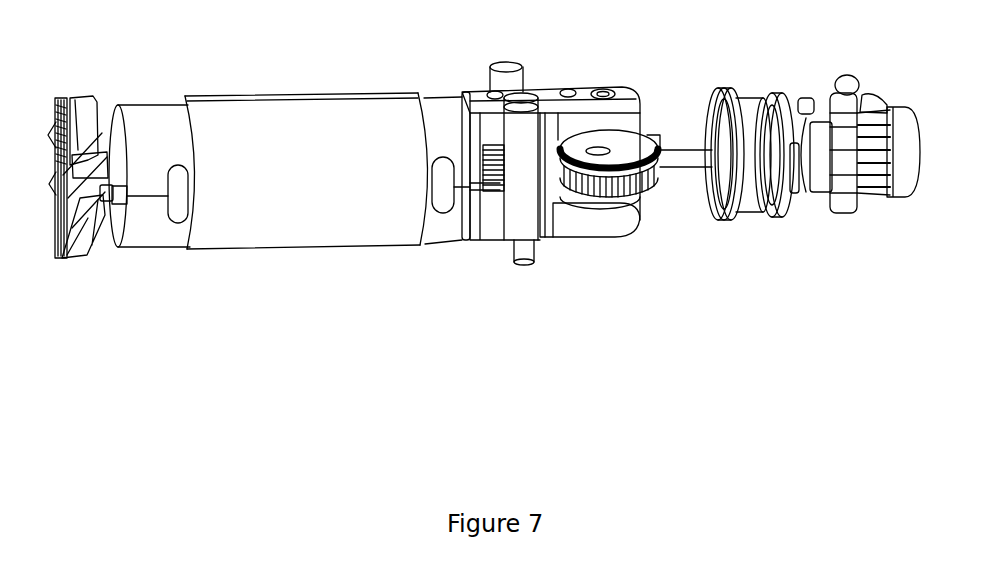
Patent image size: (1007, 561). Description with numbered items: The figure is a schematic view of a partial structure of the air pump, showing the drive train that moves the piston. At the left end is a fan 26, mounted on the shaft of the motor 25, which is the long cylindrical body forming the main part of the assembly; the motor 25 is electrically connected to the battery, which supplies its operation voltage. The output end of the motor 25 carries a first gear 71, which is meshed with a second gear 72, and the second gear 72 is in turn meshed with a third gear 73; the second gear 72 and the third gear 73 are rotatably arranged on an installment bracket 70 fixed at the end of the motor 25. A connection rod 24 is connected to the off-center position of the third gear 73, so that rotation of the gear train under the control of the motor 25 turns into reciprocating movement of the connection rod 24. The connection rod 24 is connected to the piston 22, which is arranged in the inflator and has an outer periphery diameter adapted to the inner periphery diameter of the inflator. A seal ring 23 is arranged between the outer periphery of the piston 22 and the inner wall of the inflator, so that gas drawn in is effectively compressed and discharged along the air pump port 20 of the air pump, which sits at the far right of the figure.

The air pump port 20 is at (922, 142).
The piston 22 is at (733, 217).
The seal ring 23 is at (763, 207).
The connection rod 24 is at (686, 150).
The motor 25 is at (303, 222).
The fan 26 is at (80, 258).
The installment bracket 70 is at (550, 90).
The first gear 71 is at (480, 240).
The second gear 72 is at (548, 235).
The third gear 73 is at (612, 238).